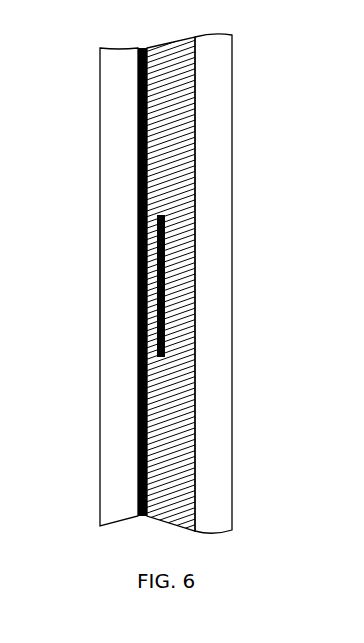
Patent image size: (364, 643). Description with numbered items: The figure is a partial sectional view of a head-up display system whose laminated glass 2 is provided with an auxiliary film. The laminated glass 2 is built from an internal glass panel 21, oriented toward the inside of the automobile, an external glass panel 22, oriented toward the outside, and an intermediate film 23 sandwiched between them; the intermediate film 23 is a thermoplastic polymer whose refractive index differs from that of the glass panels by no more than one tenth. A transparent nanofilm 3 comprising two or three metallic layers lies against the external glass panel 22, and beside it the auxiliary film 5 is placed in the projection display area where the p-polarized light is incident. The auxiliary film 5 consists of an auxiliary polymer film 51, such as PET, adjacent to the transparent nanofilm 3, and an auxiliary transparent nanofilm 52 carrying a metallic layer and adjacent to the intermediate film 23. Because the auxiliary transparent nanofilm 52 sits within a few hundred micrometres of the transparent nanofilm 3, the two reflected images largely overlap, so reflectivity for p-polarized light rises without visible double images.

The laminated glass 2 is at (169, 291).
The internal glass panel 21 is at (210, 143).
The external glass panel 22 is at (120, 143).
The intermediate film 23 is at (177, 380).
The transparent nanofilm 3 is at (93, 282).
The auxiliary film 5 is at (172, 280).
The auxiliary polymer film 51 is at (138, 255).
The auxiliary transparent nanofilm 52 is at (138, 323).